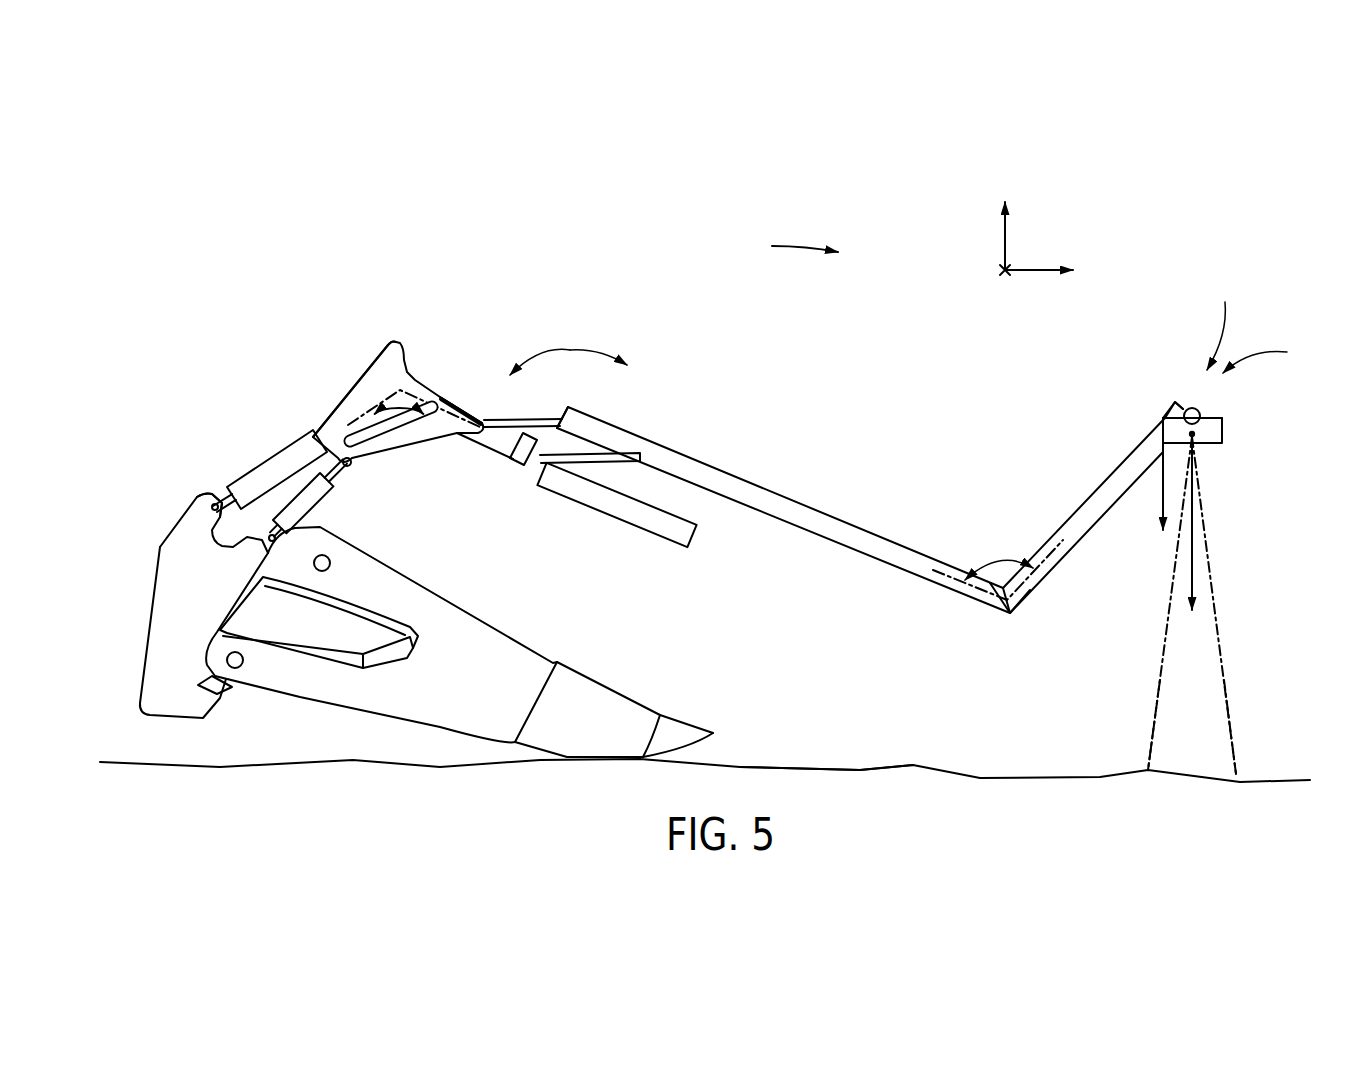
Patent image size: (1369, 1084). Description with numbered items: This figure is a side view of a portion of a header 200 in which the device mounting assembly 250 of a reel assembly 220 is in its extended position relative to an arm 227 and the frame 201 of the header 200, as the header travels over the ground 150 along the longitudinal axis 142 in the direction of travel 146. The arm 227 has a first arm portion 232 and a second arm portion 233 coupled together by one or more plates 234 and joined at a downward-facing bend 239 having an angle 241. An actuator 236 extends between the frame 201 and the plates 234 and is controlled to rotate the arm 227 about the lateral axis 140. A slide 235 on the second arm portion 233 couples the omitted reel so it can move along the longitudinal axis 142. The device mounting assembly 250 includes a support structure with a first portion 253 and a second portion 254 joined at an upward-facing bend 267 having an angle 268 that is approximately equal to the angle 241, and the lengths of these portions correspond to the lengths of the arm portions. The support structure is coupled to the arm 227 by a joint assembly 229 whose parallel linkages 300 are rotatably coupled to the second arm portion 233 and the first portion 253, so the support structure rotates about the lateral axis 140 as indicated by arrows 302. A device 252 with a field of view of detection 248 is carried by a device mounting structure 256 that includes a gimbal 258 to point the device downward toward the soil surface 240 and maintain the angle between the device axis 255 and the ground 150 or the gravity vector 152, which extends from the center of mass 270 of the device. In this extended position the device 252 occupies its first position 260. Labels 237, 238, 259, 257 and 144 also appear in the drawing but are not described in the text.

The header 200 is at (370, 178).
The reel assembly 220 is at (465, 248).
The arm 227 is at (313, 345).
The joint assembly 229 is at (652, 370).
The arrows 302 is at (570, 350).
The linkages 300 is at (530, 418).
The plates 234 is at (373, 357).
The first arm portion 232 is at (278, 443).
The cylinder rod 237 is at (222, 493).
The bucket mounting ear 238 is at (198, 478).
The frame 201 is at (158, 570).
The actuator 236 is at (412, 512).
The bend 239 is at (382, 432).
The angle 241 is at (417, 427).
The slide 235 is at (530, 463).
The second arm portion 233 is at (603, 504).
The first portion 253 is at (891, 478).
The second portion 254 is at (1093, 493).
The device mounting assembly 250 is at (912, 448).
The angle 268 is at (985, 563).
The bend 267 is at (1012, 533).
The device 252 is at (1222, 430).
The gimbal 258 is at (1291, 385).
The sensor mount 259 is at (1190, 405).
The axis 255 is at (1160, 497).
The center of mass 270 is at (1198, 440).
The gravity vector 152 is at (1286, 530).
The field of view of detection 248 is at (1304, 612).
The first position 260 is at (1163, 263).
The sensor direction 257 is at (1251, 270).
The device mounting structure 256 is at (1336, 338).
The lateral axis 140 is at (1003, 270).
The longitudinal axis 142 is at (1111, 285).
The vertical axis 144 is at (1005, 240).
The direction of travel 146 is at (781, 236).
The soil surface 240 is at (925, 770).
The ground 150 is at (858, 770).